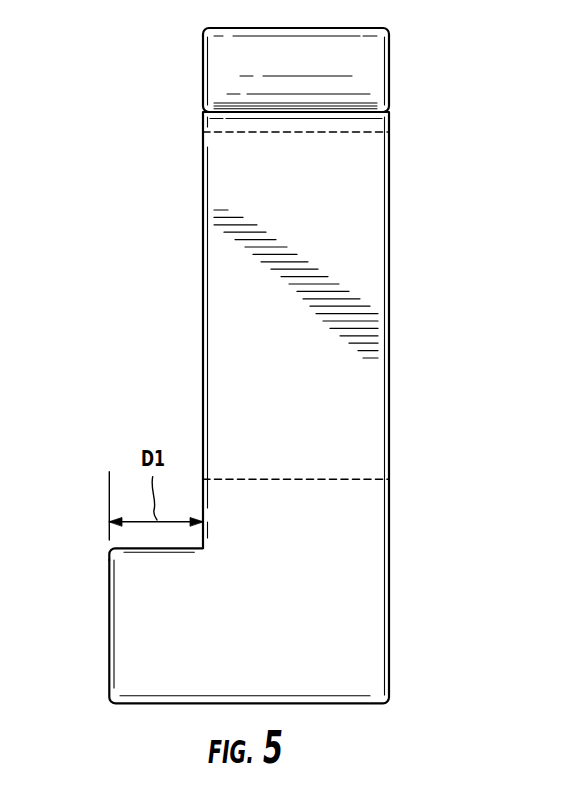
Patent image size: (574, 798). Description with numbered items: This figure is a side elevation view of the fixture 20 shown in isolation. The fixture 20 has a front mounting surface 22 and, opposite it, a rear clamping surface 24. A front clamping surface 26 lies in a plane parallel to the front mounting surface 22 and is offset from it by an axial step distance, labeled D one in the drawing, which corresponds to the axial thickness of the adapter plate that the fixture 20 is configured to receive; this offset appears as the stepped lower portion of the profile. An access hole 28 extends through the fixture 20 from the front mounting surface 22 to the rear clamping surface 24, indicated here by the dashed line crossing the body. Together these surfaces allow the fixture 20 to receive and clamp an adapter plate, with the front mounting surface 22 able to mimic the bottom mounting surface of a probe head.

The fixture 20 is at (280, 365).
The front mounting surface 22 is at (203, 169).
The rear clamping surface 24 is at (389, 532).
The front clamping surface 26 is at (109, 622).
The access hole 28 is at (338, 479).